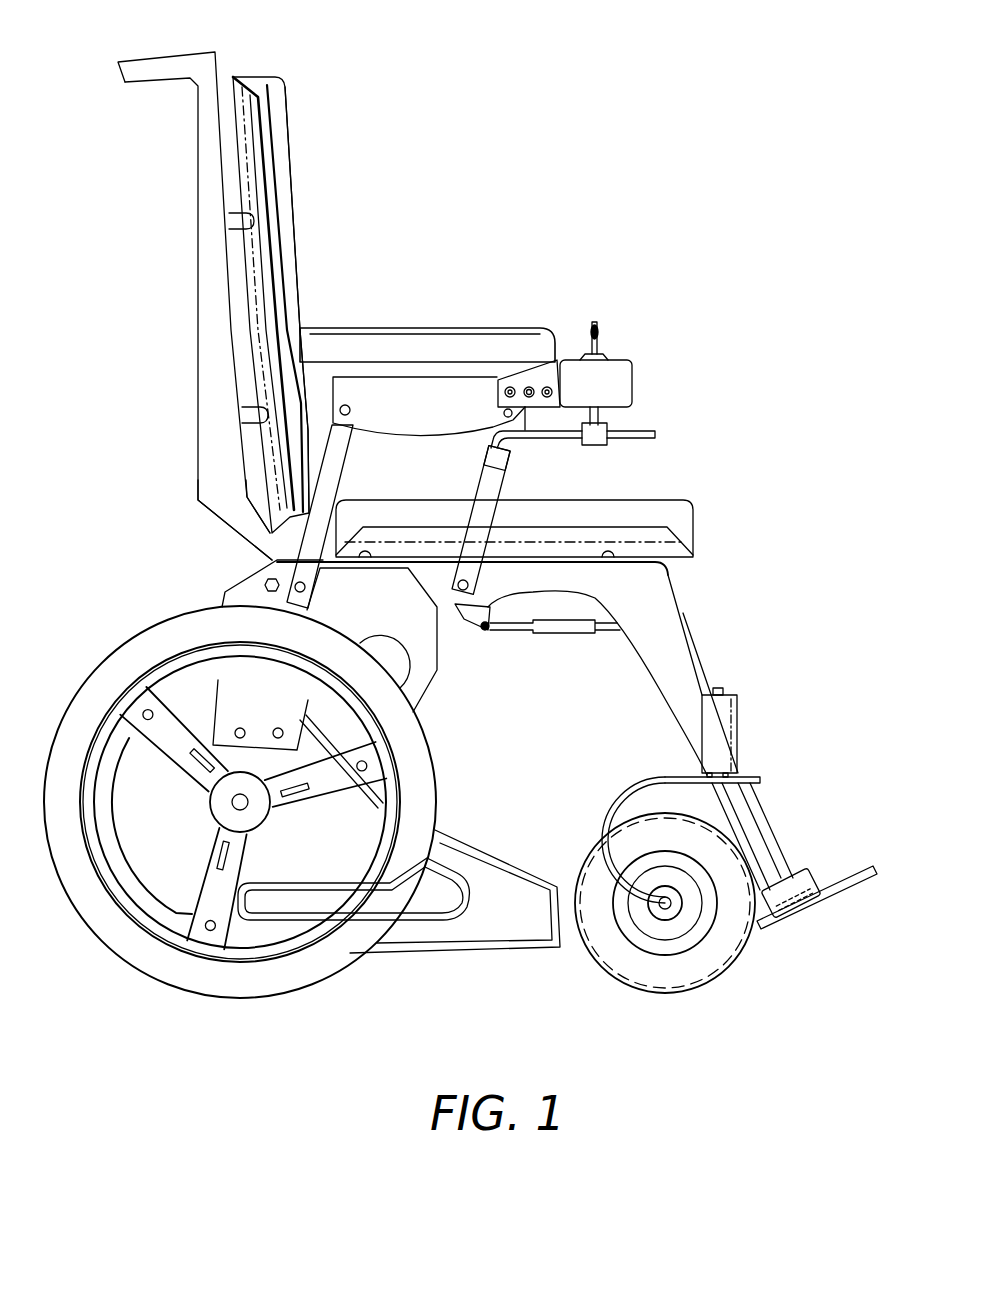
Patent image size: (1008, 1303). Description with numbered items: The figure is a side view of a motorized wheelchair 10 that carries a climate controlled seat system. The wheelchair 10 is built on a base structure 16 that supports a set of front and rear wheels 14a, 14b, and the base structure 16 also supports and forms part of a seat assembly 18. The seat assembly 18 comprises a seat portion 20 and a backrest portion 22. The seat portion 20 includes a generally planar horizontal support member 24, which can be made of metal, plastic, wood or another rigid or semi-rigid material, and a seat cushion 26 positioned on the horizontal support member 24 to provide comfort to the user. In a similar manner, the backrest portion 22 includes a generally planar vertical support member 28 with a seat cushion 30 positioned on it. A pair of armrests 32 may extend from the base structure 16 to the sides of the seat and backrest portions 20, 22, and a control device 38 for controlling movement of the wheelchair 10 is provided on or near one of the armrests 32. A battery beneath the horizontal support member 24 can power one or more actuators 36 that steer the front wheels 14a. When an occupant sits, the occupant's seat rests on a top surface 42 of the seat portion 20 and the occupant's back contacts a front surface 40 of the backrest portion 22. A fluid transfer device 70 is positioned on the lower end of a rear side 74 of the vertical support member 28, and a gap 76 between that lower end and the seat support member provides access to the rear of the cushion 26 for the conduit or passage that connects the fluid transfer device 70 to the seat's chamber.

The motorized wheelchair 10 is at (652, 165).
The front wheels 14a is at (710, 1010).
The rear wheels 14b is at (167, 1007).
The base structure 16 is at (723, 622).
The seat assembly 18 is at (436, 252).
The seat portion 20 is at (710, 470).
The backrest portion 22 is at (312, 108).
The horizontal support member 24 is at (665, 550).
The seat cushion 26 is at (695, 512).
The vertical support member 28 is at (240, 160).
The seat cushion 30 is at (292, 203).
The armrests 32 is at (538, 303).
The actuators 36 is at (740, 737).
The control device 38 is at (660, 355).
The front surface 40 is at (302, 318).
The top surface 42 is at (625, 500).
The fluid transfer device 70 is at (237, 478).
The rear side 74 is at (247, 322).
The gap 76 is at (285, 547).